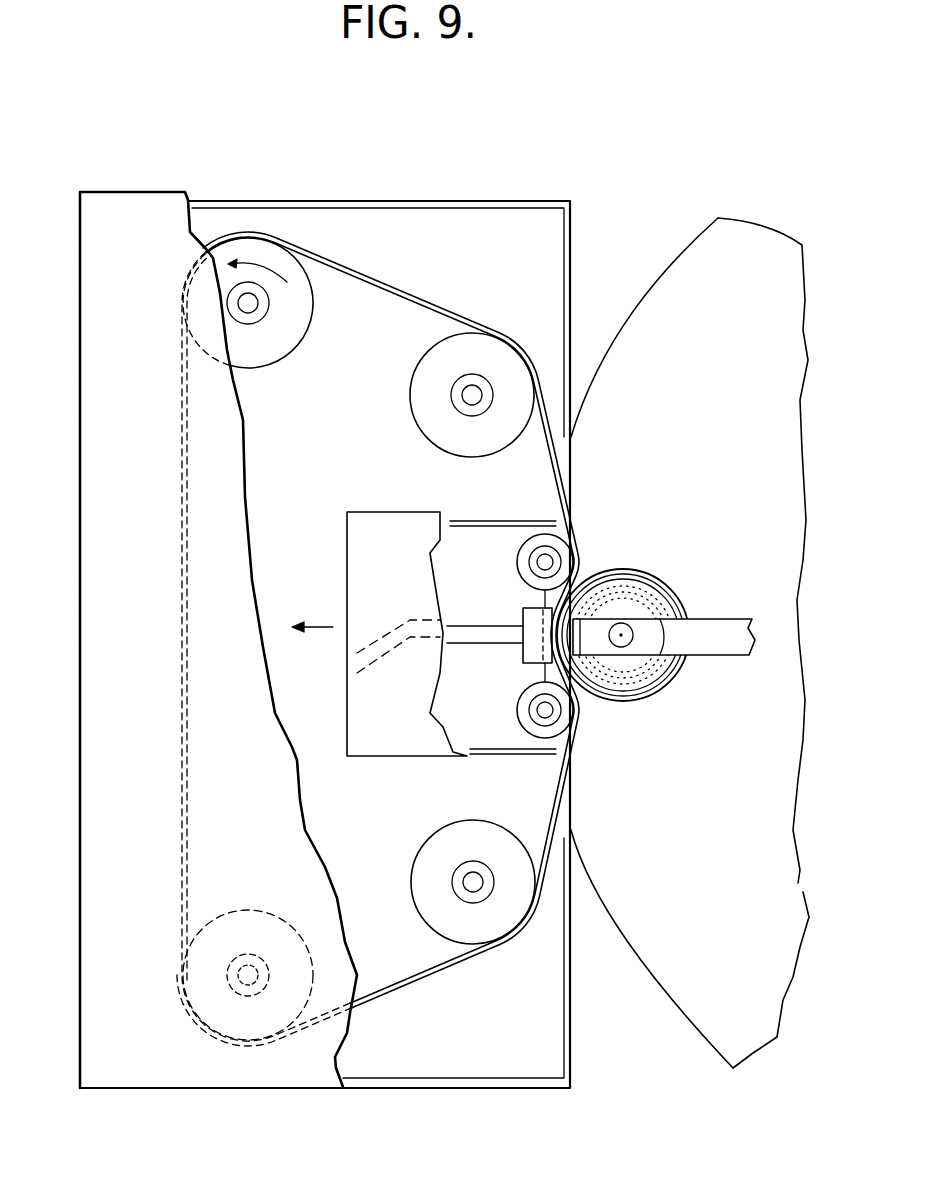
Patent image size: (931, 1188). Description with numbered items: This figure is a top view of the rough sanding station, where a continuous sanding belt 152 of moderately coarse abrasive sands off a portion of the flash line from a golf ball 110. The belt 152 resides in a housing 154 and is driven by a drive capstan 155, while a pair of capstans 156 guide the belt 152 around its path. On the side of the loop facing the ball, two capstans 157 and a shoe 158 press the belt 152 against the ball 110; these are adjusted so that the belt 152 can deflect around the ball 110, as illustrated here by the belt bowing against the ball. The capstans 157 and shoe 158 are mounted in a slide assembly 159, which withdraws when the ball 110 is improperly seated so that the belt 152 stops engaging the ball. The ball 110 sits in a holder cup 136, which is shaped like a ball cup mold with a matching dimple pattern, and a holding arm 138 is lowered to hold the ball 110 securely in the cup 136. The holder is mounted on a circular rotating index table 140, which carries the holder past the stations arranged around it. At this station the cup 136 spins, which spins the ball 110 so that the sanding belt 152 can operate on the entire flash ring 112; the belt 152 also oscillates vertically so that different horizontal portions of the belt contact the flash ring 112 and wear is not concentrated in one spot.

The housing 154 is at (424, 200).
The rotating index table 140 is at (633, 323).
The drive capstan 155 is at (300, 334).
The capstans 156 is at (412, 397).
The capstans 157 is at (520, 558).
The continuous sanding belt 152 is at (577, 533).
The slide assembly 159 is at (376, 511).
The shoe 158 is at (523, 617).
The holder cup 136 is at (632, 706).
The flash ring 112 is at (635, 578).
The ball 110 is at (657, 610).
The holding arm 138 is at (732, 650).